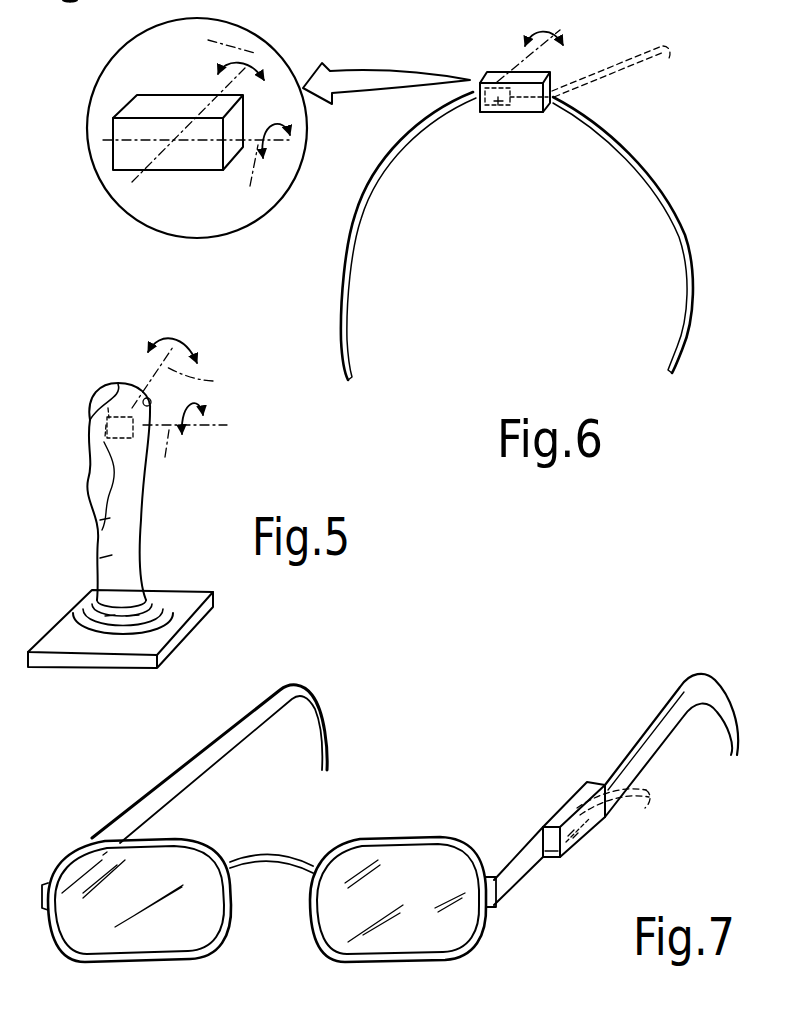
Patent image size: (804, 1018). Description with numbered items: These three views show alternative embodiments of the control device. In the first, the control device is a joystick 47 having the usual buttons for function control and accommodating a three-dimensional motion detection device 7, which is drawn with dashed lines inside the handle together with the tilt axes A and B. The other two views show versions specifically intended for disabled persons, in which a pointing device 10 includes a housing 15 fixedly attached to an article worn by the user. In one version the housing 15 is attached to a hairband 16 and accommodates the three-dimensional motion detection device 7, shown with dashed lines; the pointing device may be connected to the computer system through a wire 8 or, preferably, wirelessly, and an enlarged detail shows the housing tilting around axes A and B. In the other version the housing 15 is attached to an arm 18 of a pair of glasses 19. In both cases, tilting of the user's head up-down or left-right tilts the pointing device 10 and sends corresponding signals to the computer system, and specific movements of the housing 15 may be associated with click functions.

In FIG. 6, the 3D-motion detection device 7 is at (498, 108).
In FIG. 5, the 3D-motion detection device 7 is at (108, 400).
In FIG. 6, the wire 8 is at (661, 60).
In FIG. 7, the wire 8 is at (648, 793).
In FIG. 6, the pointing device 10 is at (181, 170).
In FIG. 7, the pointing device 10 is at (560, 802).
In FIG. 6, the housing 15 is at (479, 101).
In FIG. 7, the housing 15 is at (550, 858).
In FIG. 6, the hairband 16 is at (685, 230).
In FIG. 7, the arm 18 is at (631, 742).
In FIG. 7, the pair of glasses 19 is at (407, 740).
In FIG. 5, the joystick 47 is at (62, 438).